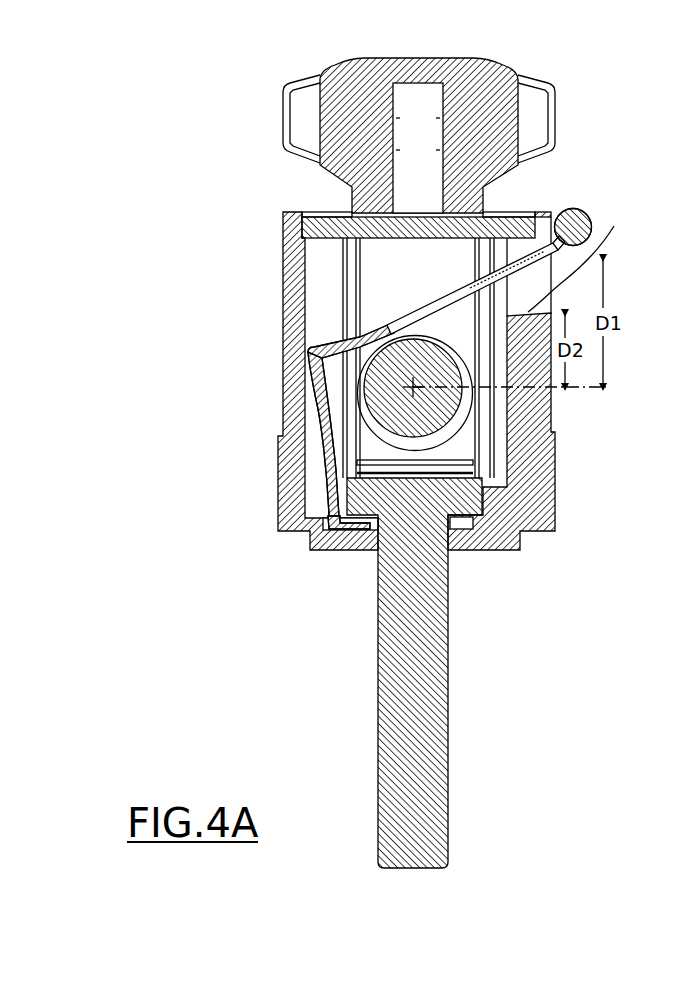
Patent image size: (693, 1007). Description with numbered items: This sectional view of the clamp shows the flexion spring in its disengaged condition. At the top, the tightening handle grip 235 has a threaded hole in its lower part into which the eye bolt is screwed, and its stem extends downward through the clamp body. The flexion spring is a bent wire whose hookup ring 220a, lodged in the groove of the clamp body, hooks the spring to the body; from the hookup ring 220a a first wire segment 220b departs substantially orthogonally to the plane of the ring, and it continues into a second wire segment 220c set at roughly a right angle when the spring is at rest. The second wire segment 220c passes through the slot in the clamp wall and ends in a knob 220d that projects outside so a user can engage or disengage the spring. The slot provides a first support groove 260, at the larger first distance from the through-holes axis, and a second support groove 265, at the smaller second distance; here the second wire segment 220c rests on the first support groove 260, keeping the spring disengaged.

The tightening handle grip 235 is at (488, 63).
The first support groove 260 is at (551, 220).
The hookup ring 220a is at (335, 550).
The first wire segment 220b is at (320, 413).
The second wire segment 220c is at (396, 328).
The knob 220d is at (586, 211).
The second support groove 265 is at (588, 260).